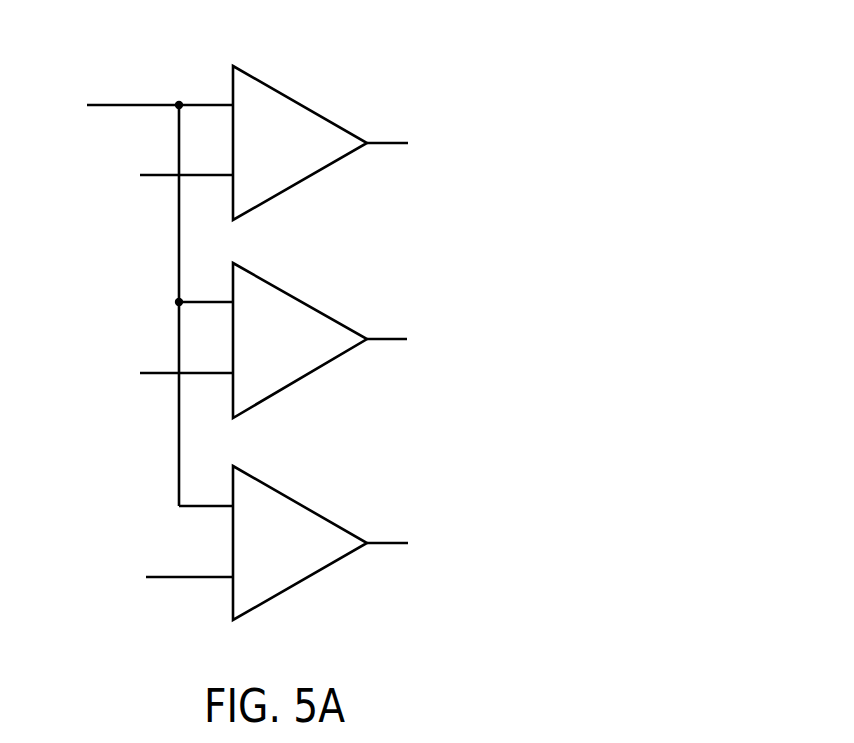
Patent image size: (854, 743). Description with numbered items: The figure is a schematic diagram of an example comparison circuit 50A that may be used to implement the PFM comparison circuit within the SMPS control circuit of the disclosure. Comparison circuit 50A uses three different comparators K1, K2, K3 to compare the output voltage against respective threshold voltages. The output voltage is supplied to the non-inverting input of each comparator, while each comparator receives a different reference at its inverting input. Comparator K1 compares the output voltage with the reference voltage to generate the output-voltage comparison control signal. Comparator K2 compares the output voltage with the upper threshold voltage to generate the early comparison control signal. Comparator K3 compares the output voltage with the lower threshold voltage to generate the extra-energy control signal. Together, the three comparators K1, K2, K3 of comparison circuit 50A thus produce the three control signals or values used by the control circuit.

The comparison circuit 50A is at (369, 320).
The comparator K1 is at (286, 152).
The comparator K2 is at (286, 351).
The comparator K3 is at (296, 554).